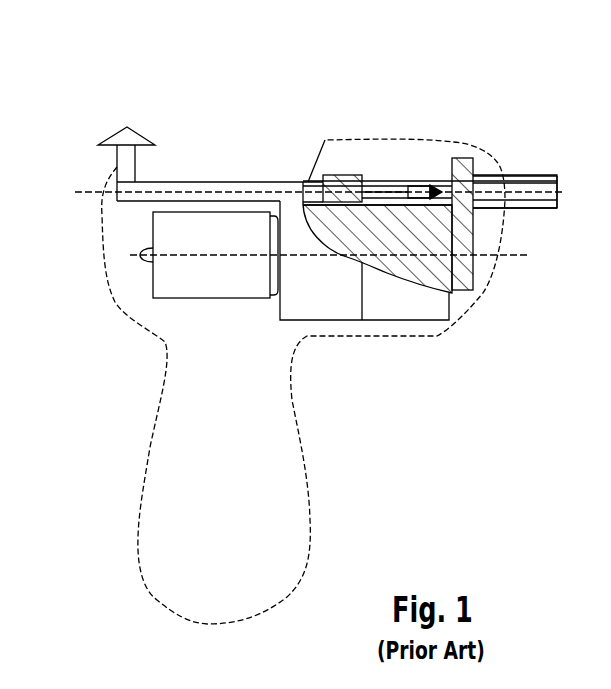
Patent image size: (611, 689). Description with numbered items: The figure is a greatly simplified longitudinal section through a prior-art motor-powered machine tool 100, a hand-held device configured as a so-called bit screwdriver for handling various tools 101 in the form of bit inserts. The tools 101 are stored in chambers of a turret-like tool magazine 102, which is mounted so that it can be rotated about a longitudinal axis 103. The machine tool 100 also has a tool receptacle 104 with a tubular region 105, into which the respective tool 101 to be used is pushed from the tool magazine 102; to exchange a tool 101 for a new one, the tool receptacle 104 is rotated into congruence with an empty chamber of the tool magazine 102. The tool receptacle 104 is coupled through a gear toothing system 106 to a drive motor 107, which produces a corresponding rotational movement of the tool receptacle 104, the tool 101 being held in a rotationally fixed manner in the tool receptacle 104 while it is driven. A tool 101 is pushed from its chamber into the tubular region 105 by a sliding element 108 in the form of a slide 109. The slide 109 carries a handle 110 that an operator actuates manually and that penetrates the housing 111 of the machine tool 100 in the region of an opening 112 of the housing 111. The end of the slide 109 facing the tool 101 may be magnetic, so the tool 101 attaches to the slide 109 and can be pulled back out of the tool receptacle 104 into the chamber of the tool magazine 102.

The motor-powered machine tool 100 is at (115, 513).
The tool 101 is at (405, 184).
The tool magazine 102 is at (410, 300).
The longitudinal axis 103 is at (520, 256).
The tool receptacle 104 is at (533, 169).
The tubular region 105 is at (533, 191).
The gear toothing system 106 is at (474, 218).
The drive motor 107 is at (222, 278).
The sliding element 108 is at (203, 178).
The slide 109 is at (173, 198).
The handle 110 is at (127, 127).
The housing 111 is at (345, 130).
The opening 112 is at (307, 173).